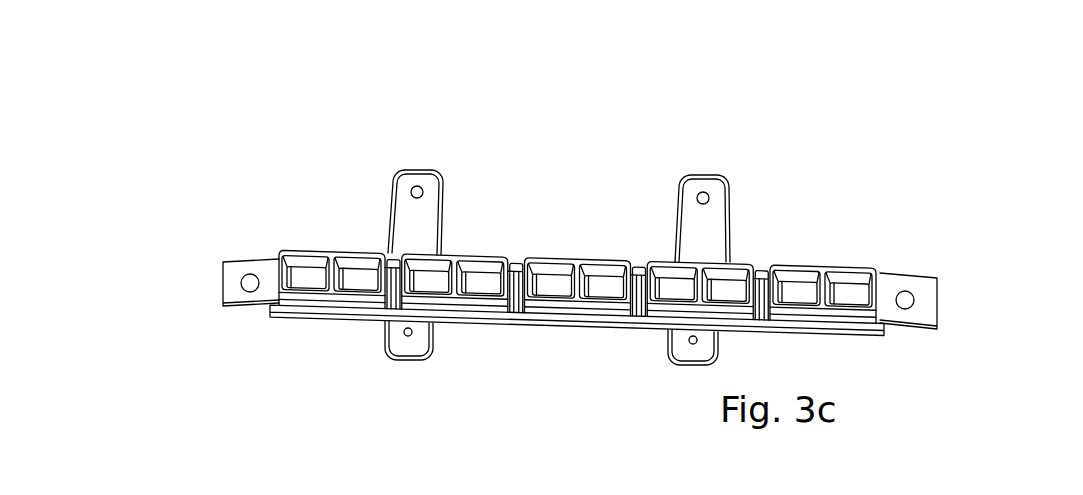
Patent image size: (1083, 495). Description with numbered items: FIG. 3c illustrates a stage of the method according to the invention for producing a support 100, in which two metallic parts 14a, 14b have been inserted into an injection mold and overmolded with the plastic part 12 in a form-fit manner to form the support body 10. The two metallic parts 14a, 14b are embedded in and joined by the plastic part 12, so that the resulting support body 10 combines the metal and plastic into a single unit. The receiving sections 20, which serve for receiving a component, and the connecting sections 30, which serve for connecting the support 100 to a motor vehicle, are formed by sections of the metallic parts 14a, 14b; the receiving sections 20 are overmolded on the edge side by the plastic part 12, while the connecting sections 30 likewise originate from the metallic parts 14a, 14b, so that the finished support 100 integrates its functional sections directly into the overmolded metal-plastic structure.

The support 100 is at (210, 158).
The support body 10 is at (330, 250).
The plastic part 12 is at (280, 253).
The metallic part 14a is at (405, 198).
The metallic part 14b is at (715, 207).
The receiving section 20 is at (440, 173).
The connecting section 30 is at (233, 275).